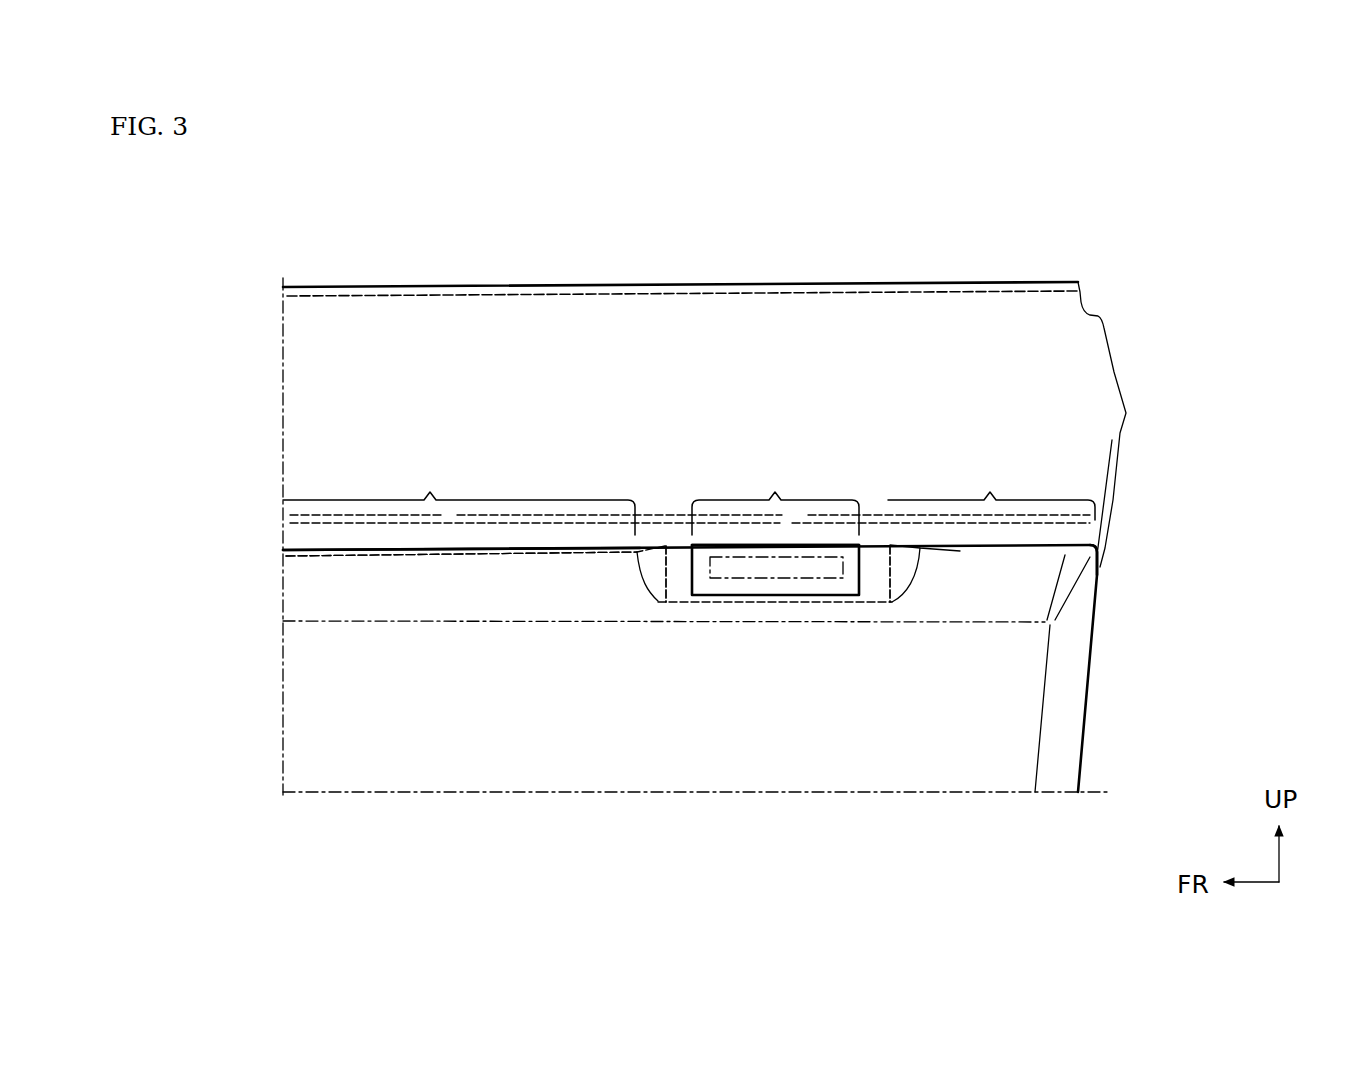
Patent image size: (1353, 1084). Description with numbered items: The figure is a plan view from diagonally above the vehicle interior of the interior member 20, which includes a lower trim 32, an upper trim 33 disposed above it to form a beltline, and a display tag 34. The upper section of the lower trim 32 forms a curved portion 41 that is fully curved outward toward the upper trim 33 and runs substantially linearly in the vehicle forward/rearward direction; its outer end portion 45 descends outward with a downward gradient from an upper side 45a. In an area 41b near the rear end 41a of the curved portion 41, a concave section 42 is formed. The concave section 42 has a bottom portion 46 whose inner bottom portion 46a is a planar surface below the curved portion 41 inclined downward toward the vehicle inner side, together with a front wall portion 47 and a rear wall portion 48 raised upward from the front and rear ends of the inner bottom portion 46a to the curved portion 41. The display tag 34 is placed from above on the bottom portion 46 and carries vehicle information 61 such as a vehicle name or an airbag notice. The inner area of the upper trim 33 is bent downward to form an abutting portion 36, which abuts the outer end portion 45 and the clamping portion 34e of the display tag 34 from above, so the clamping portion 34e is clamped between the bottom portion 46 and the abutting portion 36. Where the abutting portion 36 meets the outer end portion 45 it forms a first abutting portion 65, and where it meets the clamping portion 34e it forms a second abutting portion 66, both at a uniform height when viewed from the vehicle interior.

The interior member 20 is at (343, 262).
The lower trim 32 is at (475, 755).
The upper trim 33 is at (631, 312).
The display tag 34 is at (810, 606).
The clamping portion 34e is at (787, 548).
The abutting portion 36 is at (452, 540).
The curved portion 41 is at (328, 585).
The rear end 41a is at (1038, 582).
The area near the rear end 41b is at (932, 568).
The concave section 42 is at (877, 565).
The outer end portion 45 is at (576, 552).
The upper side 45a is at (576, 552).
The bottom portion 46 is at (680, 570).
The inner bottom portion 46a is at (673, 712).
The front wall portion 47 is at (655, 570).
The rear wall portion 48 is at (902, 573).
The vehicle information 61 is at (739, 580).
The first abutting portion 65 is at (689, 500).
The second abutting portion 66 is at (775, 500).